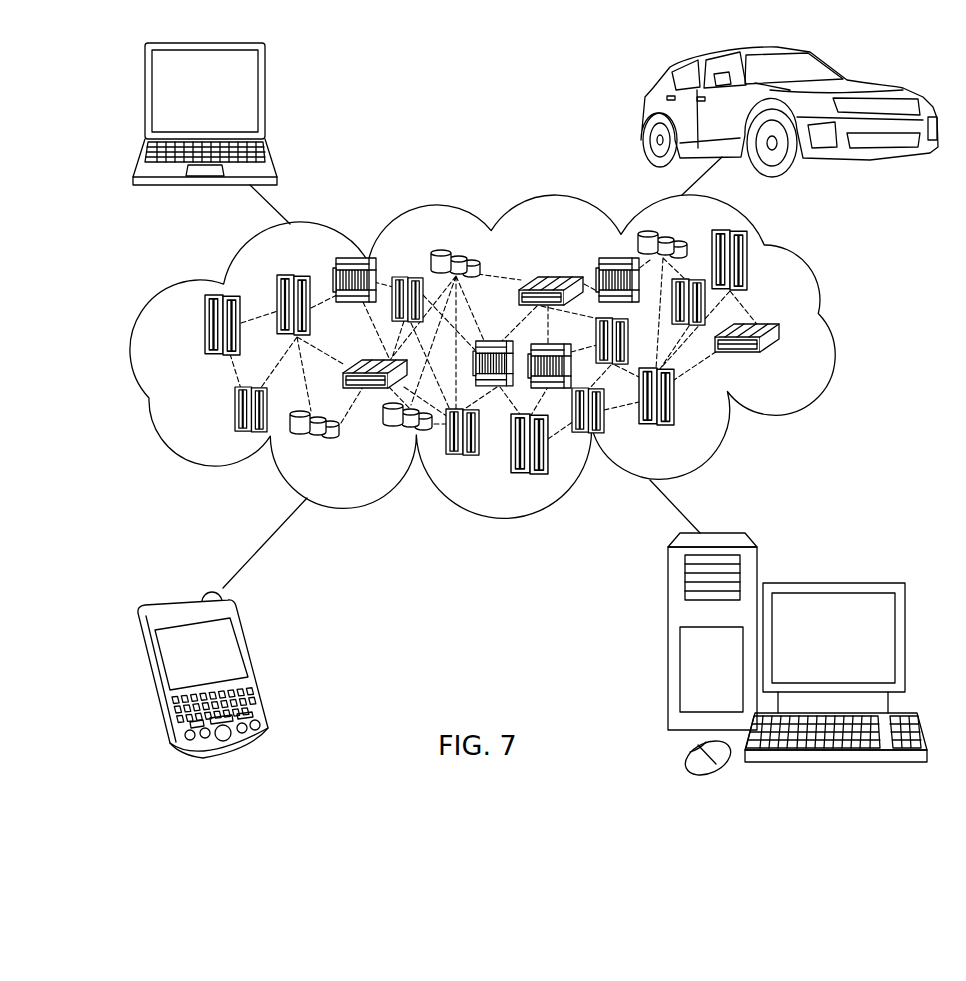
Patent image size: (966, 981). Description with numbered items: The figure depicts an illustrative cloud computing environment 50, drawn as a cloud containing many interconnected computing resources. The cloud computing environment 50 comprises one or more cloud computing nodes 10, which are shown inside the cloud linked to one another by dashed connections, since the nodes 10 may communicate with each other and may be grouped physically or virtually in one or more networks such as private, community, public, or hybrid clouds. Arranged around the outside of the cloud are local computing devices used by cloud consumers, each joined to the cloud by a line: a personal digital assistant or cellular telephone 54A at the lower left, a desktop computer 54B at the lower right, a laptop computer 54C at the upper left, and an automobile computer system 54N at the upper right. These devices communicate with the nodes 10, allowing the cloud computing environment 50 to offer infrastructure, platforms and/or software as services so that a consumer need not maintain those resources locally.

The cloud computing node 10 is at (792, 363).
The cloud computing environment 50 is at (832, 332).
The personal digital assistant or cellular telephone 54A is at (258, 665).
The desktop computer 54B is at (830, 583).
The laptop computer 54C is at (265, 98).
The automobile computer system 54N is at (641, 112).